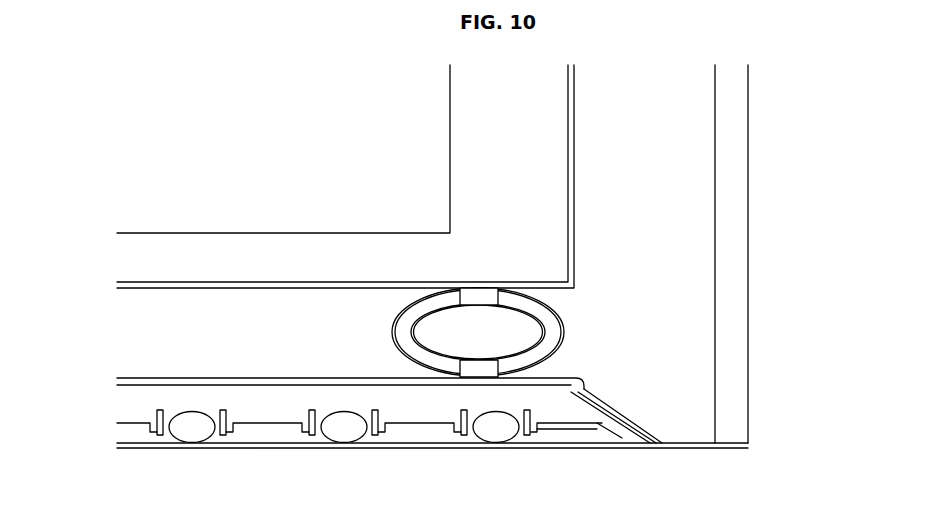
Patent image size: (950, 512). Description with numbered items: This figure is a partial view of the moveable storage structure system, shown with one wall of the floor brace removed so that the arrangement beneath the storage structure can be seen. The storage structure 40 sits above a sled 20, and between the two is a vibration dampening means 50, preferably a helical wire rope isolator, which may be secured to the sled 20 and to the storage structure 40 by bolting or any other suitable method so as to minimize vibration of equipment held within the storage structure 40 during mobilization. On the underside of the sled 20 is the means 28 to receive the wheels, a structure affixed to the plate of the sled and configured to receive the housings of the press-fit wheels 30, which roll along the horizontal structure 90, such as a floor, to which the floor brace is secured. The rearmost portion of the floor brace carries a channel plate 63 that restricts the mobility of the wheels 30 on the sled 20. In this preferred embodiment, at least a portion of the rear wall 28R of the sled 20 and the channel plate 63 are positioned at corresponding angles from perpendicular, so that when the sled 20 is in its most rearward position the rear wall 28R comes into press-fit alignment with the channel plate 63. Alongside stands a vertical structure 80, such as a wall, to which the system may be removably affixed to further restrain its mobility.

The storage structure 40 is at (191, 243).
The vertical structure 80 is at (732, 222).
The vibration dampening means 50 is at (402, 330).
The sled 20 is at (138, 383).
The rear wall 28R is at (615, 415).
The means to receive the wheels 28 is at (447, 405).
The channel plate 63 is at (628, 425).
The wheels 30 is at (350, 440).
The horizontal structure 90 is at (545, 449).